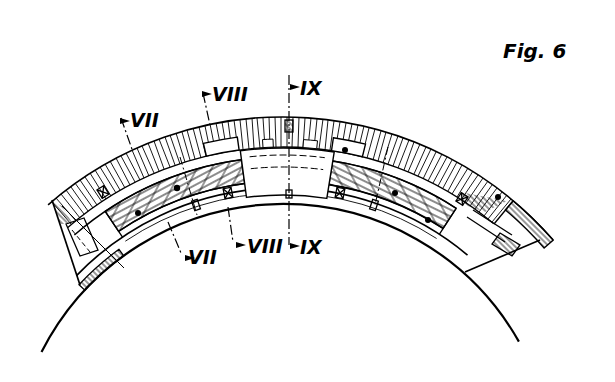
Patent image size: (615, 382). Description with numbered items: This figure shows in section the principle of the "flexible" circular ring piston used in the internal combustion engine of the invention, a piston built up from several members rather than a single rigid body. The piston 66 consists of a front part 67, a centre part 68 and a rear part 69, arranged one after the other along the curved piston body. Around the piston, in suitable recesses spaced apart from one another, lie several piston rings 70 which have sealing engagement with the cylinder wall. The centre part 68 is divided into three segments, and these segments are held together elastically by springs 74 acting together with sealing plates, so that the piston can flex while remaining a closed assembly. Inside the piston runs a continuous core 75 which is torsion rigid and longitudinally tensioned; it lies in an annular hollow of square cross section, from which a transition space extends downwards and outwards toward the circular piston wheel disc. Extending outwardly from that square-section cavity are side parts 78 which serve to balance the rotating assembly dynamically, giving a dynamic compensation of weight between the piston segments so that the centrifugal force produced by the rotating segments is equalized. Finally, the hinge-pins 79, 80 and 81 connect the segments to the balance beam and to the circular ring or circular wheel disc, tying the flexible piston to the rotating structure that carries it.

The piston 66 is at (453, 160).
The front part 67 is at (97, 276).
The centre part 68 is at (400, 230).
The rear part 69 is at (520, 223).
The piston rings 70 is at (388, 147).
The springs 74 is at (100, 190).
The core 75 is at (403, 178).
The side parts 78 is at (217, 200).
The hinge-pin 79 is at (138, 215).
The hinge-pin 80 is at (177, 191).
The hinge-pin 81 is at (212, 143).